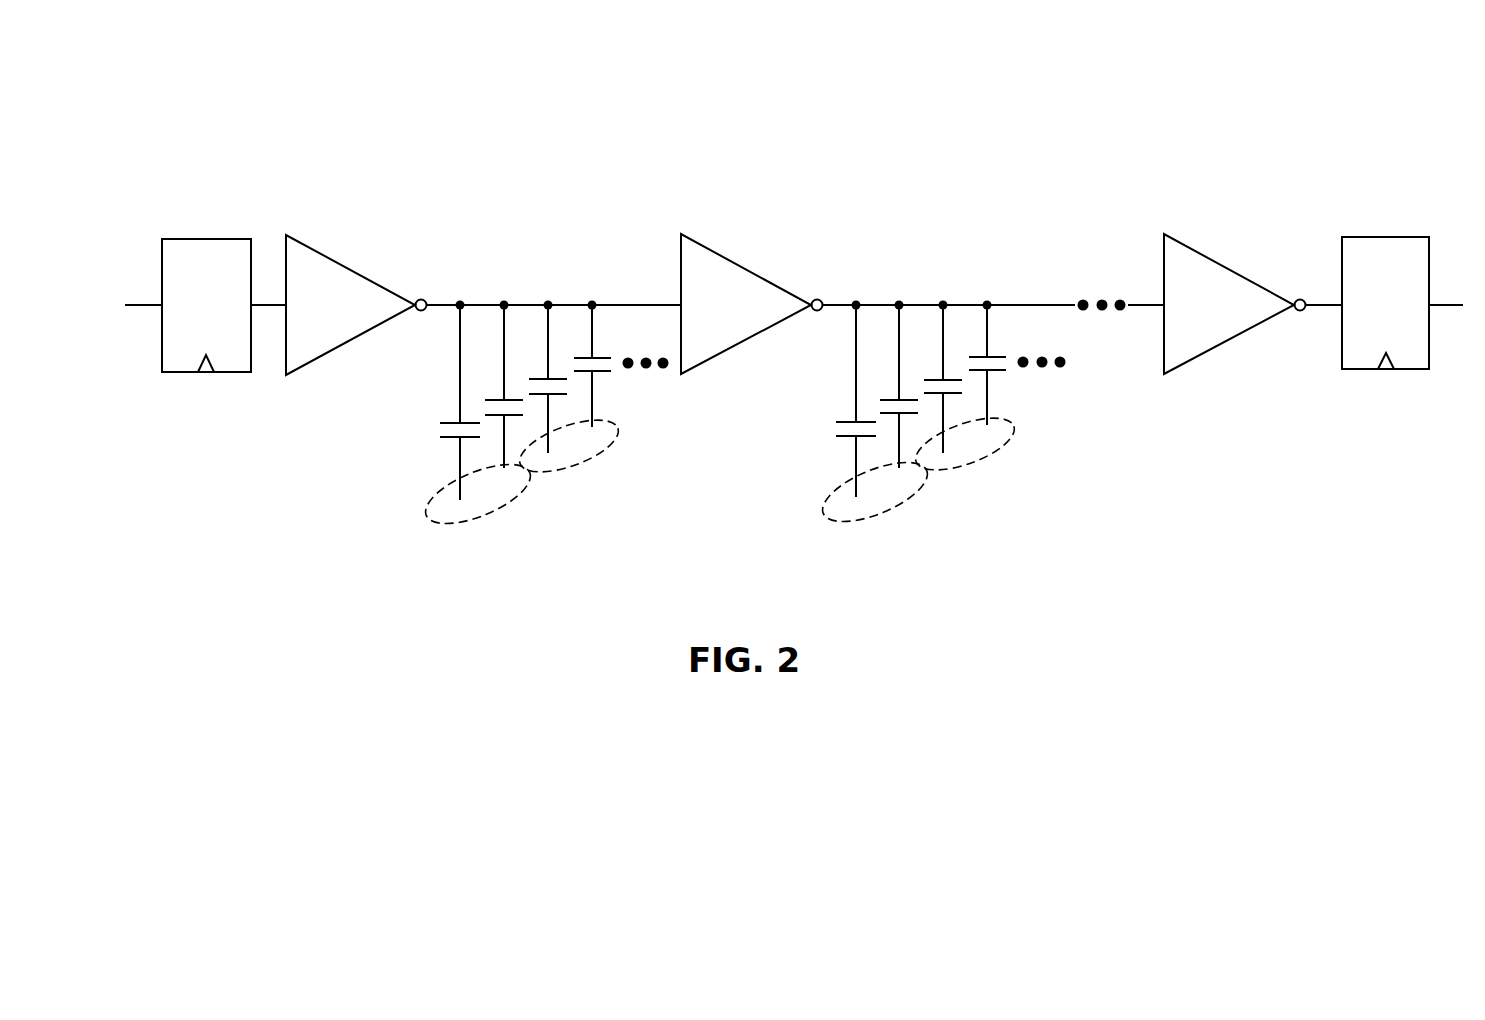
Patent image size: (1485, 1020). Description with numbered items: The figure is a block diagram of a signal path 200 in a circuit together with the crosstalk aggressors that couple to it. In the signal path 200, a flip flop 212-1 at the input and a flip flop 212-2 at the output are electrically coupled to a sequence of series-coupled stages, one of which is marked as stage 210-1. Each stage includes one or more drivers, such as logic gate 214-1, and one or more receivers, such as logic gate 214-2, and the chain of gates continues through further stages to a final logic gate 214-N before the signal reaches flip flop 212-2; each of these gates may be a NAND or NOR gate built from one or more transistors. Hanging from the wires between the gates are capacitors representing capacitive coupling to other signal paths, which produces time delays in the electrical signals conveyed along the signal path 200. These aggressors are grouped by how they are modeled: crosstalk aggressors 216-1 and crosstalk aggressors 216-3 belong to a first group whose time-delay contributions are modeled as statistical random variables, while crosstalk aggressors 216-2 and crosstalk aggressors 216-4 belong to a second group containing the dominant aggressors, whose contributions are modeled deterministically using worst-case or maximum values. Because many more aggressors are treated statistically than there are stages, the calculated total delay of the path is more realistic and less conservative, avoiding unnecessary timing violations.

The signal path 200 is at (315, 126).
The stage 210-1 is at (822, 220).
The flip flop 212-1 is at (184, 341).
The flip flop 212-2 is at (1364, 339).
The logic gate 214-1 is at (307, 327).
The logic gate 214-2 is at (704, 327).
The logic gate 214-N is at (1184, 327).
The crosstalk aggressors 216-1 is at (516, 502).
The crosstalk aggressors 216-2 is at (608, 421).
The crosstalk aggressors 216-3 is at (909, 503).
The crosstalk aggressors 216-4 is at (1003, 447).